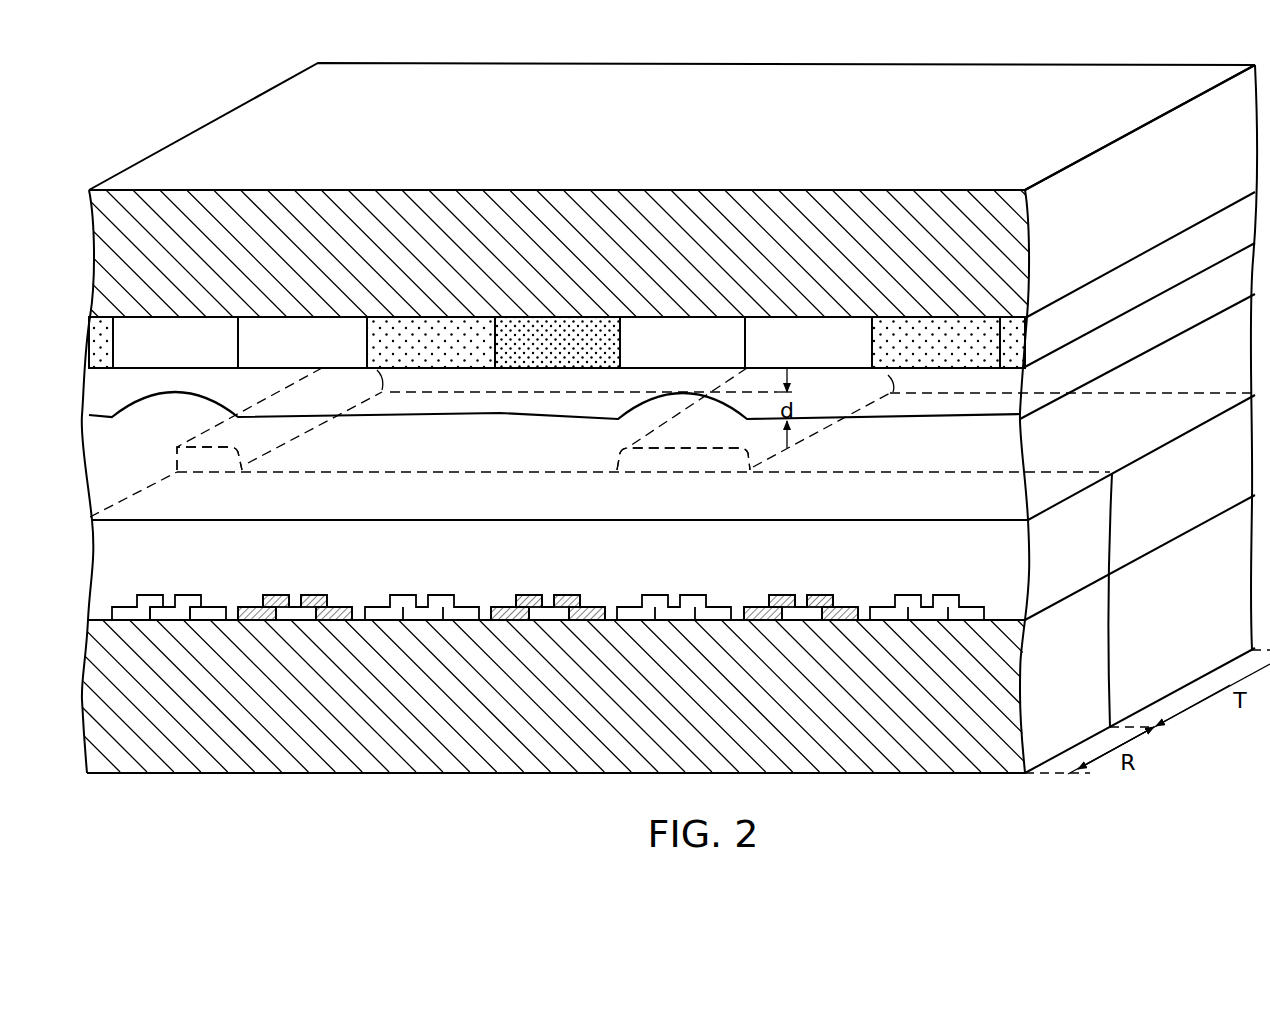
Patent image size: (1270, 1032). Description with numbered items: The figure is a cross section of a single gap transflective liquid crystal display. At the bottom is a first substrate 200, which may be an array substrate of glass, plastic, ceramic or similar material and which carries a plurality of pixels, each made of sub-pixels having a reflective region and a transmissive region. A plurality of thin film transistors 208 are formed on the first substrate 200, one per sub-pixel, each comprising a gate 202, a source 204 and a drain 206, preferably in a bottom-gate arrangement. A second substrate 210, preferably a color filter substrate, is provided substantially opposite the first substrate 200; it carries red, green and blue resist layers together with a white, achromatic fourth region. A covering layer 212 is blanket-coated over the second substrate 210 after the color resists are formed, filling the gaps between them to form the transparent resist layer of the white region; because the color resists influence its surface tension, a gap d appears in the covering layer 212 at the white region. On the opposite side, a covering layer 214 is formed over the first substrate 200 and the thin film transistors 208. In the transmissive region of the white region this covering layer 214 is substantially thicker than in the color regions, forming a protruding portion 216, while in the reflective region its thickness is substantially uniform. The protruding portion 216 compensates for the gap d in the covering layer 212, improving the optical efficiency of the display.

The first substrate 200 is at (863, 727).
The gate 202 is at (168, 613).
The source 204 is at (125, 613).
The drain 206 is at (213, 613).
The thin film transistor 208 is at (538, 731).
The second substrate 210 is at (787, 210).
The covering layer 212 is at (105, 388).
The covering layer 214 is at (1005, 598).
The protruding portion 216 is at (683, 457).